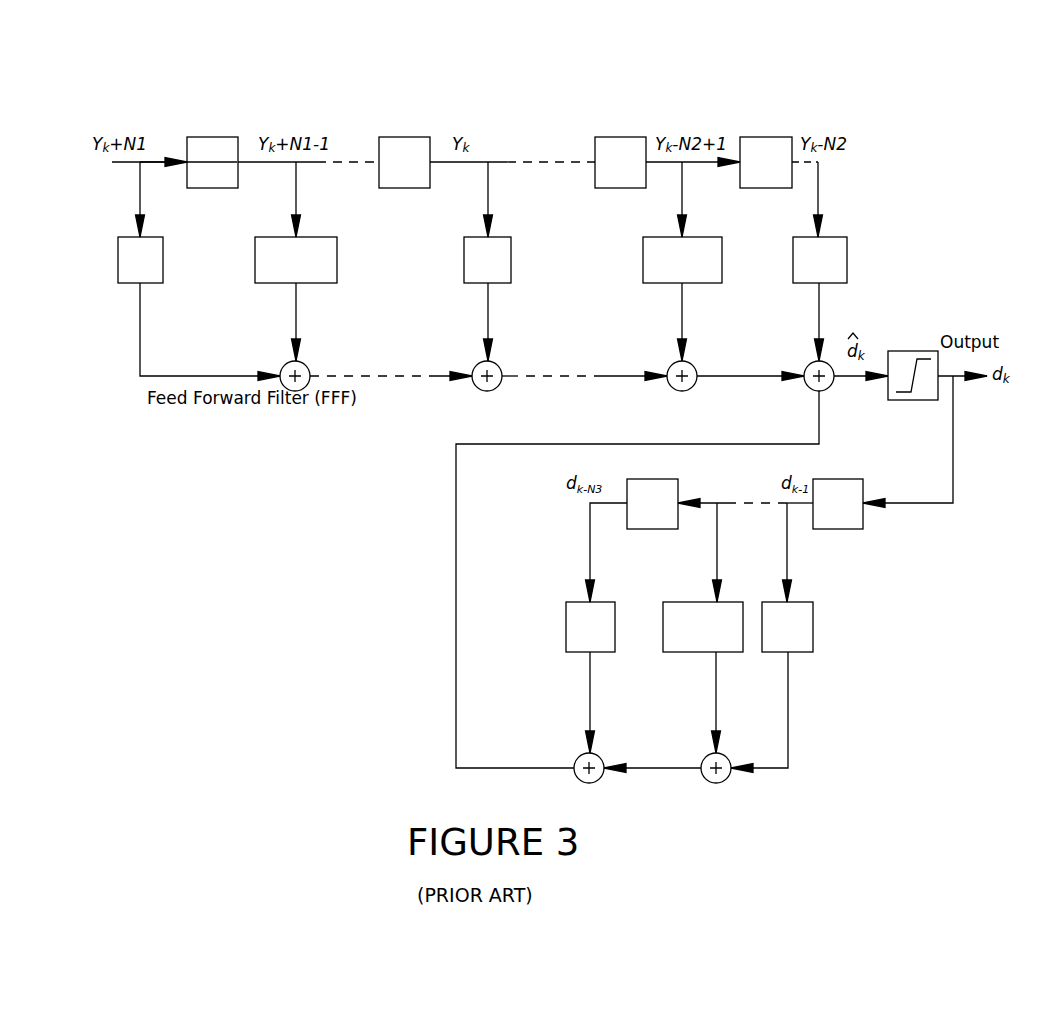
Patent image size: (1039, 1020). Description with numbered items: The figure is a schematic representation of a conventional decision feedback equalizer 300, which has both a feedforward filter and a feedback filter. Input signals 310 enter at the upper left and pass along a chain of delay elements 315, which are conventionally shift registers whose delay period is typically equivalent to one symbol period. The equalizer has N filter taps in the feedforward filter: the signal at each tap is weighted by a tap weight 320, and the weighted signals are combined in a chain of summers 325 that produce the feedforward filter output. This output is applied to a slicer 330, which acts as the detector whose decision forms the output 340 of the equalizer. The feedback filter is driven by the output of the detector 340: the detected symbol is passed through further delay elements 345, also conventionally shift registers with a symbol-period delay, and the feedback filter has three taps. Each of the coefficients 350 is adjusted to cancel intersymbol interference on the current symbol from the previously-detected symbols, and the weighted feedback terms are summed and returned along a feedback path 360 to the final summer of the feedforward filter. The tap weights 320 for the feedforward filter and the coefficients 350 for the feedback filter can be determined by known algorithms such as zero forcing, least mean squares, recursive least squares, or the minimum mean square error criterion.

The equalizer 300 is at (554, 412).
The input signals 310 is at (116, 139).
The delay elements 315 is at (489, 162).
The tap weights 320 is at (482, 260).
The summers 325 is at (604, 313).
The slicer 330 is at (905, 328).
The detector 340 is at (988, 385).
The delay elements 345 is at (726, 540).
The coefficients 350 is at (689, 627).
The feedback path 360 is at (637, 579).